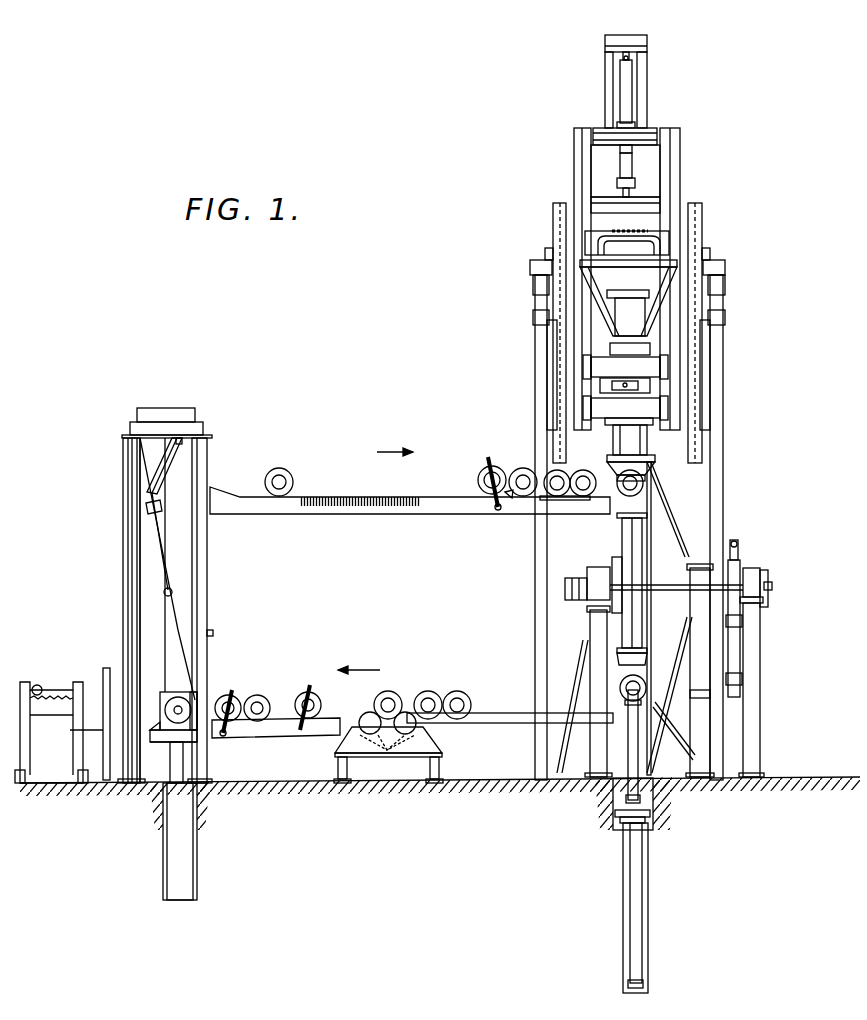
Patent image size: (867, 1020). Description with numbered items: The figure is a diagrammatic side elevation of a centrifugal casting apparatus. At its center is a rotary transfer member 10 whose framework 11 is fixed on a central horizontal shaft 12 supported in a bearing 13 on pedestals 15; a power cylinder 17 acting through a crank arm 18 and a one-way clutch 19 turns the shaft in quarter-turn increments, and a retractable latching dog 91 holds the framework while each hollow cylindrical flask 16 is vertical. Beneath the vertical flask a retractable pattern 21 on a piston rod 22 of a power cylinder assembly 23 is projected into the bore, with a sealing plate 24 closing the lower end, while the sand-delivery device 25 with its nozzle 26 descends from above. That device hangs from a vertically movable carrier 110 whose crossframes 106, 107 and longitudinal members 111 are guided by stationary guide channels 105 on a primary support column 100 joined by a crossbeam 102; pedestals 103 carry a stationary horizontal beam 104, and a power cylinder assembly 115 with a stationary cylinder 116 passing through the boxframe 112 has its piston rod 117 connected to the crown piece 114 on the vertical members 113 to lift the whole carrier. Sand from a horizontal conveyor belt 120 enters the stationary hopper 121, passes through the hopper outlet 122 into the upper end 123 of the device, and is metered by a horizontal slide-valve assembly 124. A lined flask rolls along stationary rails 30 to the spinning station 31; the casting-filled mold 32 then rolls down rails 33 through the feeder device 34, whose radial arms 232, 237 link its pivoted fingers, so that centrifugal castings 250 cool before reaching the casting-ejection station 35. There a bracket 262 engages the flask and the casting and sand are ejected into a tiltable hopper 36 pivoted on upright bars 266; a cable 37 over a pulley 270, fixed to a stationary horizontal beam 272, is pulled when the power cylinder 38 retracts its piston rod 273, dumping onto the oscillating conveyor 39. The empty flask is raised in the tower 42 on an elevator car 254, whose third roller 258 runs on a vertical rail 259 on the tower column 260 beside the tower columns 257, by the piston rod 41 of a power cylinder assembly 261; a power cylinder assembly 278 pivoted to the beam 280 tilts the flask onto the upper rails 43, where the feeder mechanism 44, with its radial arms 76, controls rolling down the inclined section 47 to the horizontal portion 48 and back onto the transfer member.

The rotary transfer member 10 is at (672, 518).
The framework 11 is at (648, 534).
The central horizontal shaft 12 is at (757, 570).
The bearing 13 is at (600, 567).
The pedestals 15 is at (590, 619).
The hollow cylindrical flask 16 is at (291, 476).
The power cylinder 17 is at (740, 634).
The crank arm 18 is at (736, 545).
The one-way clutch 19 is at (770, 589).
The retractable pattern 21 is at (642, 788).
The piston rod 22 is at (622, 823).
The power cylinder assembly 23 is at (633, 913).
The sealing plate 24 is at (615, 813).
The sand-delivery device 25 is at (612, 437).
The nozzle 26 is at (643, 485).
The stationary rails 30 is at (492, 715).
The spinning station 31 is at (378, 788).
The casting-filled mold 32 is at (400, 694).
The rails 33 is at (330, 736).
The feeder device 34 is at (242, 690).
The casting-ejection station 35 is at (168, 752).
The tiltable hopper 36 is at (148, 688).
The cable 37 is at (178, 612).
The power cylinder 38 is at (150, 507).
The oscillating conveyor 39 is at (55, 690).
The piston rod 41 is at (180, 765).
The tower 42 is at (120, 453).
The upper trackway or rails 43 is at (298, 514).
The feeder mechanism 44 is at (488, 462).
The inclined section 47 is at (510, 498).
The horizontal portion 48 is at (565, 500).
The radial arms 76 is at (495, 507).
The retractable latching dog 91 is at (655, 712).
The primary support column 100 is at (537, 340).
The crossbeam 102 is at (540, 262).
The pedestals 103 is at (553, 219).
The stationary horizontal beam 104 is at (650, 200).
The stationary guide channels 105 is at (547, 297).
The crossframe 106 is at (683, 364).
The crossframe 107 is at (683, 412).
The vertically movable carrier 110 is at (574, 181).
The longitudinal members 111 is at (582, 163).
The boxframe 112 is at (600, 128).
The vertical members 113 is at (605, 67).
The crown piece 114 is at (627, 35).
The power cylinder assembly 115 is at (640, 161).
The stationary cylinder 116 is at (632, 150).
The piston rod 117 is at (628, 84).
The horizontal conveyor belt 120 is at (665, 250).
The stationary hopper 121 is at (642, 272).
The hopper outlet 122 is at (638, 330).
The upper end 123 is at (612, 347).
The horizontal slide-valve assembly 124 is at (652, 388).
The radial arms 232 is at (312, 684).
The radial arms 237 is at (224, 737).
The centrifugal casting 250 is at (37, 684).
The elevator car 254 is at (162, 736).
The tower columns 257 is at (198, 668).
The third roller 258 is at (152, 726).
The vertical rail 259 is at (138, 590).
The tower column 260 is at (128, 540).
The power cylinder assembly 261 is at (167, 877).
The bracket 262 is at (185, 692).
The upright bars 266 is at (103, 730).
The pulley 270 is at (175, 595).
The stationary horizontal beam 272 is at (214, 632).
The piston rod 273 is at (160, 565).
The power cylinder assembly 278 is at (178, 452).
The beam 280 is at (200, 425).